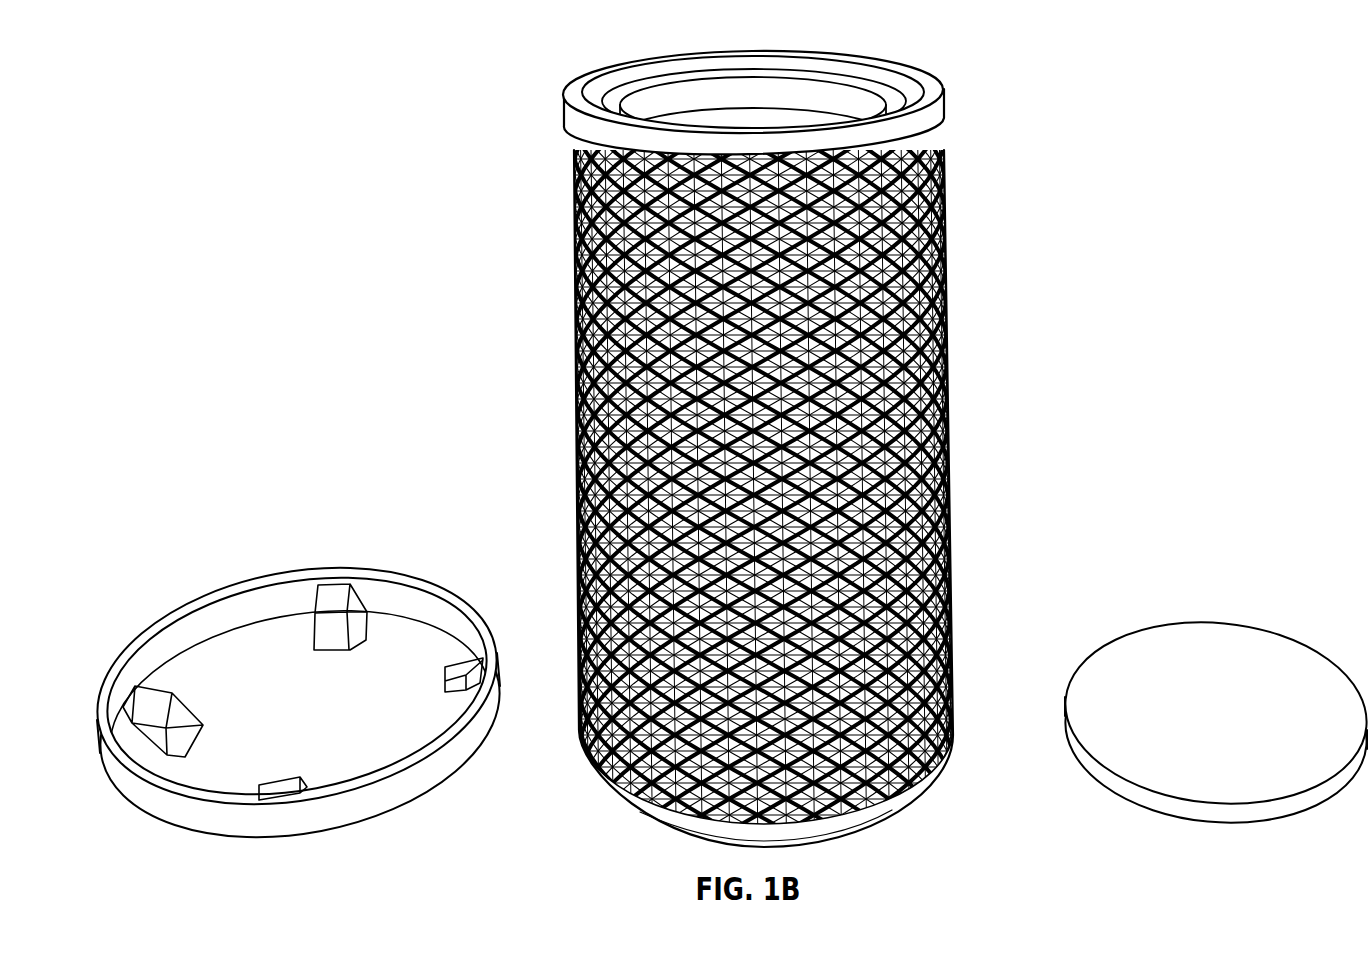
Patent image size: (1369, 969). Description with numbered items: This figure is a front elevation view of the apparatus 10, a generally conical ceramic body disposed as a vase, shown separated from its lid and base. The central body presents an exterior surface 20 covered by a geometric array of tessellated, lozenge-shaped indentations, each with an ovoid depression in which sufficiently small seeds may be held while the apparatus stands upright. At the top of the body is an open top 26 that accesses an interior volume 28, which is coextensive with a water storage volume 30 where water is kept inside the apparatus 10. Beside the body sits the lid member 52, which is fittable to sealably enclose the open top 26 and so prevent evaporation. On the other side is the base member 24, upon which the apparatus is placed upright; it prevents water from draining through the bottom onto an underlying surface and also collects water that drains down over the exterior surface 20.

The apparatus 10 is at (1208, 150).
The exterior surface 20 is at (950, 507).
The base member 24 is at (211, 613).
The open top 26 is at (708, 103).
The interior volume 28 is at (821, 103).
The water storage volume 30 is at (749, 101).
The lid member 52 is at (1295, 662).